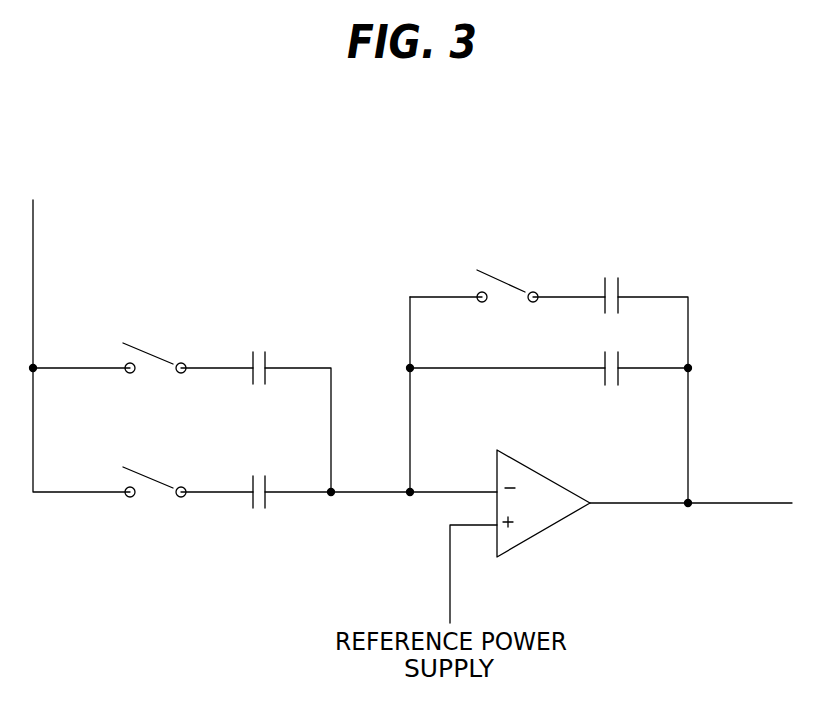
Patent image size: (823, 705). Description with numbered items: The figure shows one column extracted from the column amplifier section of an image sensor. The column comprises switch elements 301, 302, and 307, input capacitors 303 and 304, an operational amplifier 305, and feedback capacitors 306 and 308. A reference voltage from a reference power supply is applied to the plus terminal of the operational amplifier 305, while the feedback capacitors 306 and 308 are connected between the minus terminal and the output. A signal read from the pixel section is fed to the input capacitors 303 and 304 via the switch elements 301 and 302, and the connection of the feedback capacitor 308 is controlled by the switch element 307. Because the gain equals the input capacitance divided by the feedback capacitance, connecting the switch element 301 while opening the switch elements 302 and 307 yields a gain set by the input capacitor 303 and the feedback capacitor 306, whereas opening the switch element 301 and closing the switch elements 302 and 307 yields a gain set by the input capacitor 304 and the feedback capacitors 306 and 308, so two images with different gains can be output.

The switch element 301 is at (149, 352).
The switch element 302 is at (149, 476).
The input capacitor 303 is at (259, 350).
The input capacitor 304 is at (259, 510).
The operational amplifier 305 is at (545, 531).
The feedback capacitor 306 is at (612, 388).
The switch element 307 is at (502, 271).
The feedback capacitor 308 is at (612, 276).